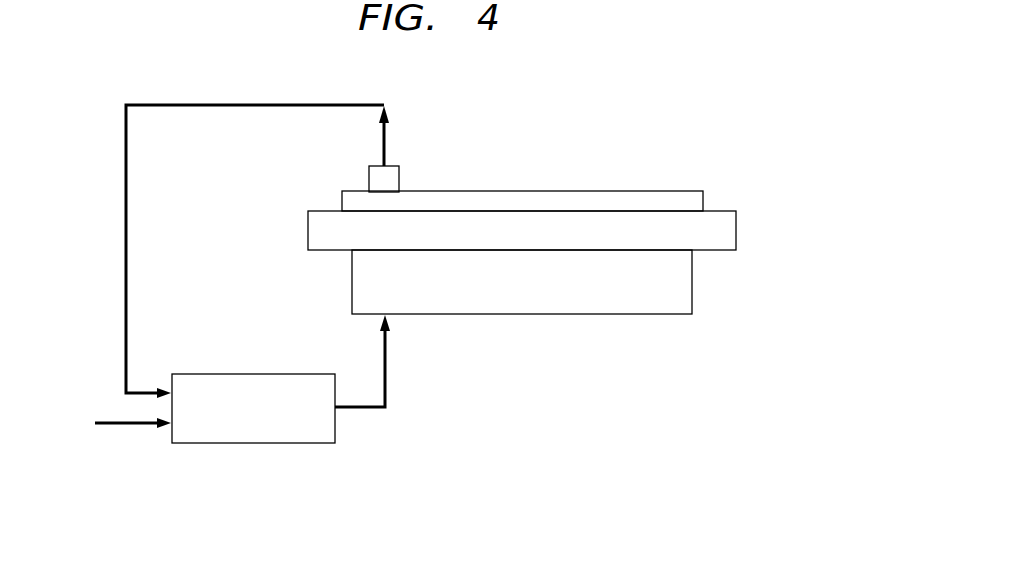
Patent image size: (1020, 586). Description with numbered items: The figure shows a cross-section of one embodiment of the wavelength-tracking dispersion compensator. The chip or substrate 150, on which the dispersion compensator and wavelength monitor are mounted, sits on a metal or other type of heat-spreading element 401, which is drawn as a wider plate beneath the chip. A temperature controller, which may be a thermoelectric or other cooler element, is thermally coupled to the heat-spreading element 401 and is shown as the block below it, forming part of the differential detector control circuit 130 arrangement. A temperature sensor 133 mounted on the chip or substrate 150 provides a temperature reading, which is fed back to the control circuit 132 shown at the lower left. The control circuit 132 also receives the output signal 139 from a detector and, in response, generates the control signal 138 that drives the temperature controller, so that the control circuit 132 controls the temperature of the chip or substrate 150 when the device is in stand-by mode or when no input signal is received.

The differential detector control circuit 130 is at (692, 282).
The control circuit 132 is at (253, 374).
The temperature sensor 133 is at (399, 178).
The control signal 138 is at (387, 368).
The output signal 139 is at (108, 424).
The chip or substrate 150 is at (703, 203).
The heat-spreading element 401 is at (736, 229).